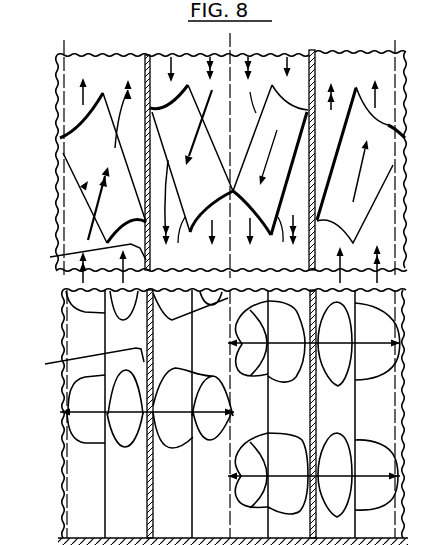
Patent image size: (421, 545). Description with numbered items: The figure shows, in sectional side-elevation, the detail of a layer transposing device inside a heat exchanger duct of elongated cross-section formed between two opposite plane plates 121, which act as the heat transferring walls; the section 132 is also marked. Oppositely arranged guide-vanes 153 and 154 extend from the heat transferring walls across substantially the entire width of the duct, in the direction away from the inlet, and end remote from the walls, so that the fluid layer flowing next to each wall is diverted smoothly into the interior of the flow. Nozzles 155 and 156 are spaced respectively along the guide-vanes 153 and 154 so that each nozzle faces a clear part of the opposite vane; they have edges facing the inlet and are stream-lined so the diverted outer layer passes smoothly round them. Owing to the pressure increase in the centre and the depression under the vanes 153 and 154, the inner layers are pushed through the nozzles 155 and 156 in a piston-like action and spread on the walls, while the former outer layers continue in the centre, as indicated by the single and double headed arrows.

The plane plates 121 is at (50, 363).
The heat exchange section 132 is at (15, 94).
The guide-vane 153 is at (115, 110).
The guide-vane 154 is at (350, 108).
The nozzle 155 is at (86, 183).
The nozzle 156 is at (317, 333).